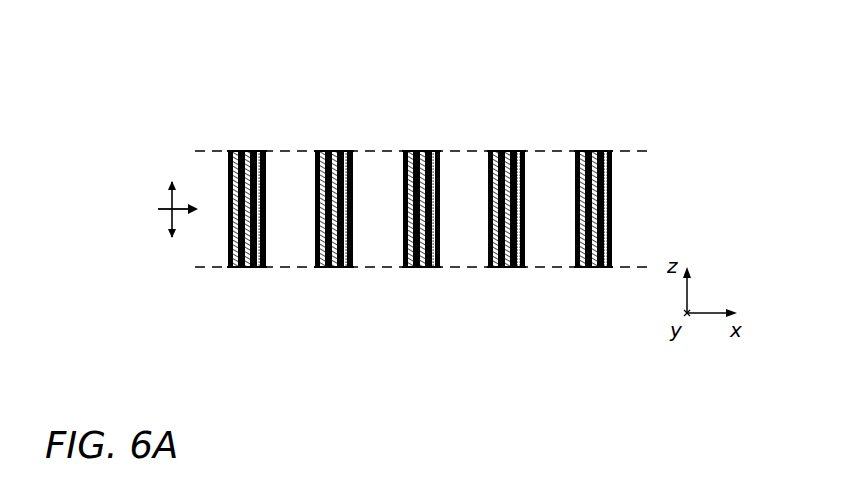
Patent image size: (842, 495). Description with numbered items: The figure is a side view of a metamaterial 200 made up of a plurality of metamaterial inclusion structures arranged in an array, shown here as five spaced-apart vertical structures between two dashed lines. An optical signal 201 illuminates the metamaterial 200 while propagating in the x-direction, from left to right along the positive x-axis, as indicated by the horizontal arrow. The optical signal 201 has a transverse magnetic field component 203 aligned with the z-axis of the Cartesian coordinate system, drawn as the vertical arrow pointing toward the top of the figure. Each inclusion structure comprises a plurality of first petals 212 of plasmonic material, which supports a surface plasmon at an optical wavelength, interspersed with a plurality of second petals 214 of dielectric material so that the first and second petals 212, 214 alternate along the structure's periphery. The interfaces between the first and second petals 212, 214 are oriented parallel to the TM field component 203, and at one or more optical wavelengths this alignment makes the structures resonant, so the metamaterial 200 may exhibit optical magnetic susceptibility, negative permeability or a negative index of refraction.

The metamaterial 200 is at (643, 63).
The optical signal 201 is at (158, 207).
The transverse magnetic (TM) field component 203 is at (172, 181).
The first petal 212 is at (612, 177).
The second petal 214 is at (607, 210).